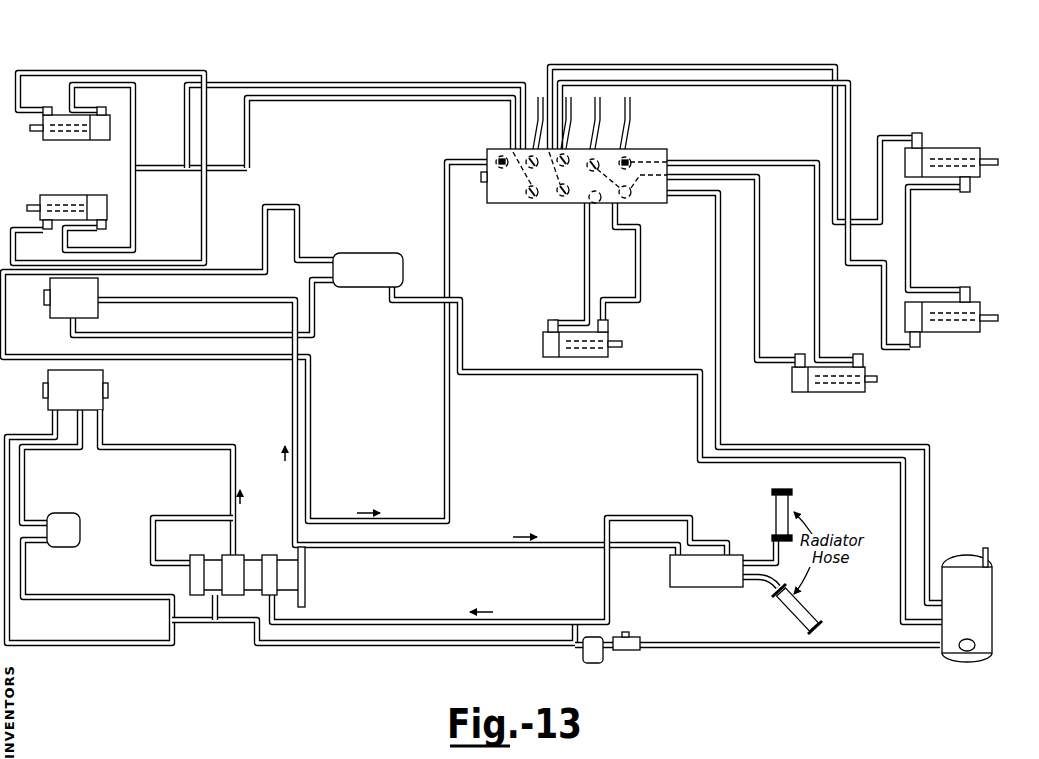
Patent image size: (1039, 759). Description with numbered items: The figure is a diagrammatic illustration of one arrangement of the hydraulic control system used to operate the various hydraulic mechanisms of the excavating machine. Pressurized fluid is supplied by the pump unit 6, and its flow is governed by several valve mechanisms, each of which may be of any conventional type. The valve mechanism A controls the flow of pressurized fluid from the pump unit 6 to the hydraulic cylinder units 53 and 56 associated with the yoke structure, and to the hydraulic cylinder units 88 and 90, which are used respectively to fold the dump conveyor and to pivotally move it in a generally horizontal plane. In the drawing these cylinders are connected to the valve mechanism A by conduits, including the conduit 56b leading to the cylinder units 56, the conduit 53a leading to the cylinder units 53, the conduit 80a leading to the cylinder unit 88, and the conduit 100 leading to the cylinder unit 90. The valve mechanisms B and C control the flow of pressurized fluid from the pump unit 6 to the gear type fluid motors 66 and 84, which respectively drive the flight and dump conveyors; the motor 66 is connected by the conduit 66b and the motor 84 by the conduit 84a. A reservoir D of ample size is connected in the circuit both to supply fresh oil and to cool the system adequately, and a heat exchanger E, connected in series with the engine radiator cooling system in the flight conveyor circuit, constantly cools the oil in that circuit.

The hydraulic cylinder unit 56 is at (55, 141).
The steering cylinder conduit 56b is at (358, 98).
The valve conduit 66b is at (321, 268).
The gear type fluid motor 66 is at (384, 253).
The valve mechanism A is at (660, 149).
The lift cylinder conduit 53a is at (840, 112).
The hydraulic cylinder unit 53 is at (980, 150).
The cylinder conduit 100 is at (636, 268).
The hydraulic cylinder unit 90 is at (610, 336).
The cylinder conduit 80a is at (817, 266).
The hydraulic cylinder unit 88 is at (845, 392).
The valve mechanism B is at (98, 290).
The valve mechanism C is at (108, 380).
The conduit 84a is at (178, 447).
The gear type fluid motor 84 is at (80, 515).
The pump unit 6 is at (255, 555).
The heat exchanger E is at (743, 555).
The reservoir D is at (992, 590).